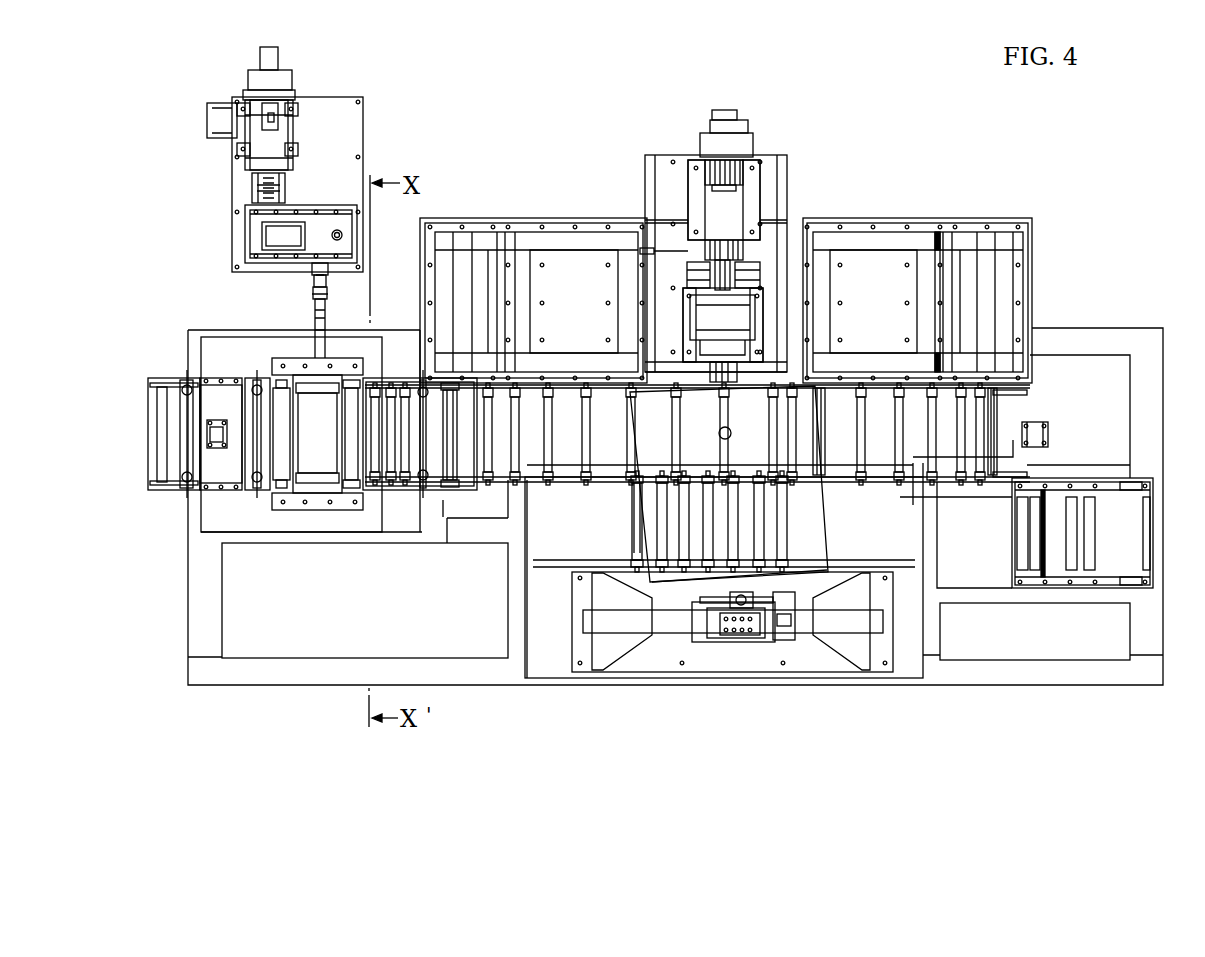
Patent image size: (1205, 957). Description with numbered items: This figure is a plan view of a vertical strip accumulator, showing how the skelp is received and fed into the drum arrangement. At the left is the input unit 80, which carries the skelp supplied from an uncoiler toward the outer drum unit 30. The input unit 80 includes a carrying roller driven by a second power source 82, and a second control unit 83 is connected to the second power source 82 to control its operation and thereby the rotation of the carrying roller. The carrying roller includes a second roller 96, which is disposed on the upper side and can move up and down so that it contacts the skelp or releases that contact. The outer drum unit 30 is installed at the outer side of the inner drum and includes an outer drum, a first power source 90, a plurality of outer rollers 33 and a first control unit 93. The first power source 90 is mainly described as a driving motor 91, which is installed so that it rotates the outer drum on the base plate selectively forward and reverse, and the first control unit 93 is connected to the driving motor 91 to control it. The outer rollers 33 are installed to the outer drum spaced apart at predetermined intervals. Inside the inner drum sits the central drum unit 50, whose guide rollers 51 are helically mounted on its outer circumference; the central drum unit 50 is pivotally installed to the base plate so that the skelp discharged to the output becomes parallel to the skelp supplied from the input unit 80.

The outer drum unit 30 is at (1080, 263).
The outer roller 33 is at (965, 397).
The central drum unit 50 is at (576, 726).
The guide roller 51 is at (637, 538).
The input unit 80 is at (168, 96).
The second power source 82 is at (255, 235).
The second control unit 83 is at (243, 123).
The first power source 90 is at (842, 165).
The driving motor 91 is at (727, 333).
The first control unit 93 is at (713, 182).
The second roller 96 is at (313, 407).